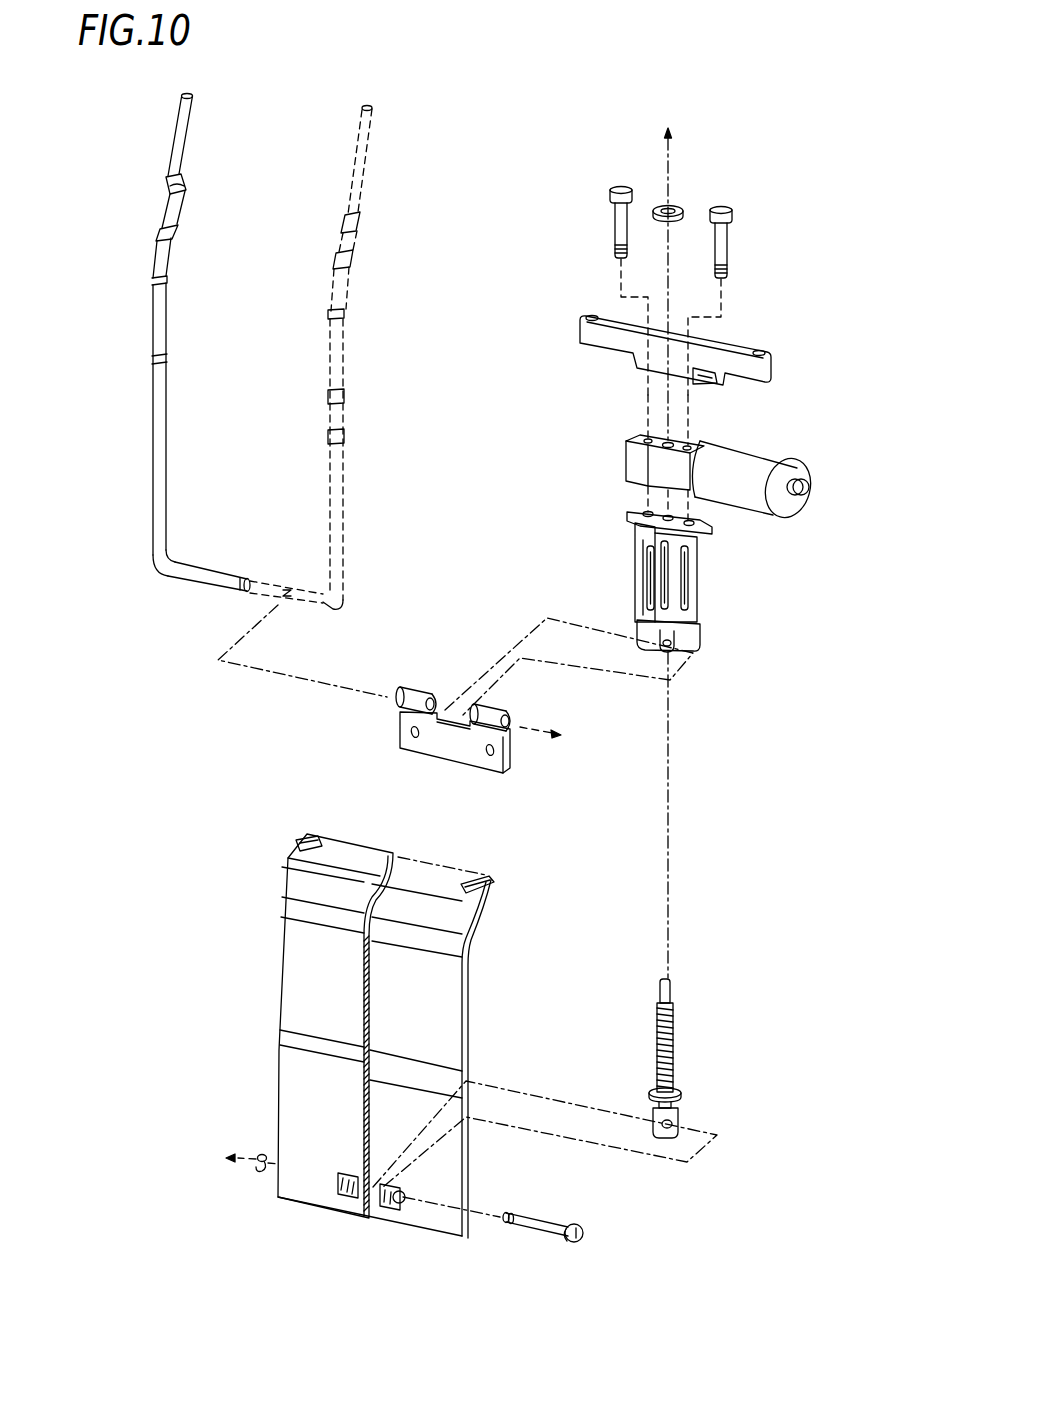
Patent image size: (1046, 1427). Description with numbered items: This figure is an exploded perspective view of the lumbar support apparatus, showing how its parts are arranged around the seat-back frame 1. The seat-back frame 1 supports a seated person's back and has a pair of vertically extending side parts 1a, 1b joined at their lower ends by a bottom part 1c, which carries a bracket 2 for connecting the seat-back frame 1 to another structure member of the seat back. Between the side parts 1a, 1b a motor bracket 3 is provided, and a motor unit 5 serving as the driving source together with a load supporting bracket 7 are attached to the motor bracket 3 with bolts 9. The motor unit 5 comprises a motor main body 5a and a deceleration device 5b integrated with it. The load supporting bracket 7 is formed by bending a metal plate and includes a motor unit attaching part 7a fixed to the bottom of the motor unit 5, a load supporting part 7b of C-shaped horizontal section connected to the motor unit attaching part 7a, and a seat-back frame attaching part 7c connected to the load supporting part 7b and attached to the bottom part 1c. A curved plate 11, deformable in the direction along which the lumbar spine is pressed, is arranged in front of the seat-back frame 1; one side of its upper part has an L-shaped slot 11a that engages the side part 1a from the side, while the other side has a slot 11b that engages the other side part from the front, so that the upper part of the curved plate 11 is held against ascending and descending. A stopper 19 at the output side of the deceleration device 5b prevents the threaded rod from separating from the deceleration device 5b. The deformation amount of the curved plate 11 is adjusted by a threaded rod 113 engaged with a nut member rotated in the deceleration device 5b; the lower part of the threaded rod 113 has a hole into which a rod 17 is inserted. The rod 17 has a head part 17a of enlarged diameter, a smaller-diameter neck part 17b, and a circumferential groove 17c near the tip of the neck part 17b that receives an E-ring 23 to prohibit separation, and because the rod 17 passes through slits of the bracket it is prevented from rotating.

The seat-back frame 1 is at (375, 196).
The side part 1a is at (150, 302).
The side part 1b is at (350, 332).
The bottom part 1c is at (185, 581).
The bracket 2 is at (440, 750).
The motor bracket 3 is at (736, 344).
The motor unit 5 is at (815, 400).
The motor main body 5a is at (746, 452).
The deceleration device 5b is at (688, 444).
The load supporting bracket 7 is at (768, 535).
The motor unit attaching part 7a is at (710, 530).
The load supporting part 7b is at (697, 558).
The seat-back frame attaching part 7c is at (686, 647).
The bolts 9 is at (630, 196).
The curved plate 11 is at (288, 967).
The L-shaped slot 11a is at (298, 845).
The slot 11b is at (468, 880).
The rod 17 is at (628, 1243).
The head part 17a is at (579, 1240).
The neck part 17b is at (536, 1235).
The circumferential groove 17c is at (507, 1222).
The stopper 19 is at (686, 206).
The E-ring 23 is at (260, 1152).
The threaded rod 113 is at (675, 1040).